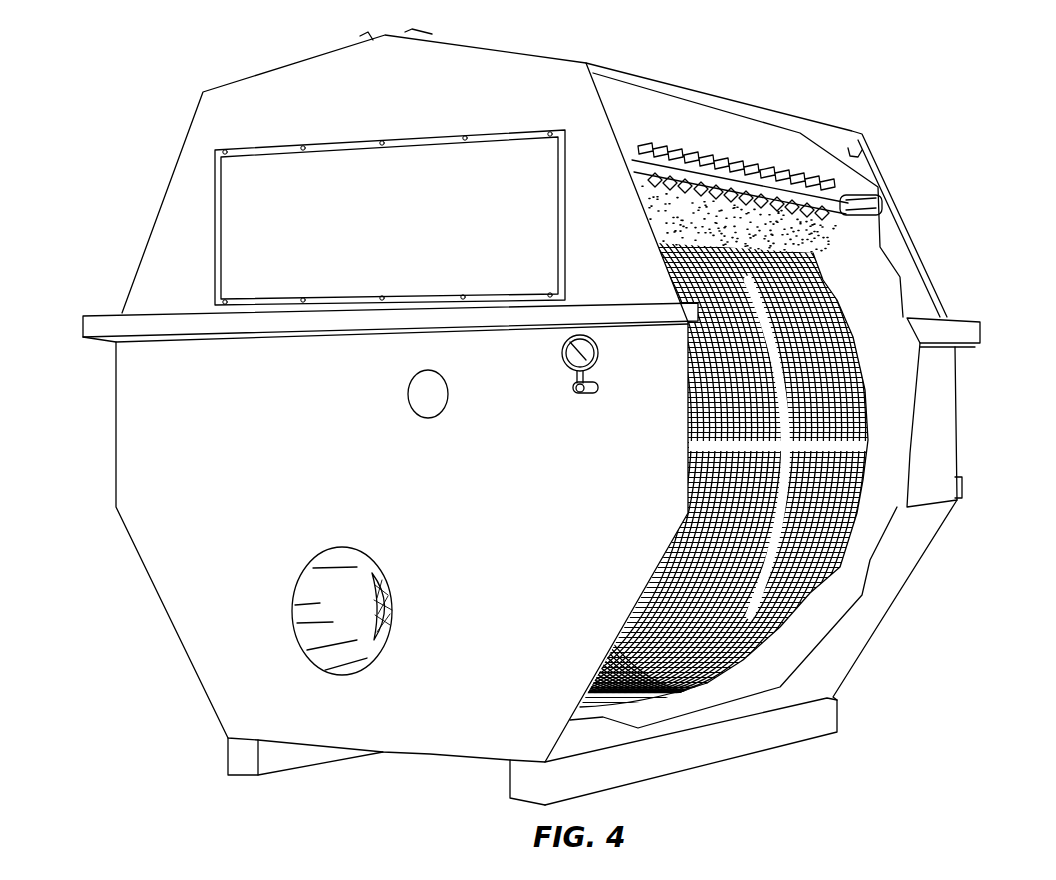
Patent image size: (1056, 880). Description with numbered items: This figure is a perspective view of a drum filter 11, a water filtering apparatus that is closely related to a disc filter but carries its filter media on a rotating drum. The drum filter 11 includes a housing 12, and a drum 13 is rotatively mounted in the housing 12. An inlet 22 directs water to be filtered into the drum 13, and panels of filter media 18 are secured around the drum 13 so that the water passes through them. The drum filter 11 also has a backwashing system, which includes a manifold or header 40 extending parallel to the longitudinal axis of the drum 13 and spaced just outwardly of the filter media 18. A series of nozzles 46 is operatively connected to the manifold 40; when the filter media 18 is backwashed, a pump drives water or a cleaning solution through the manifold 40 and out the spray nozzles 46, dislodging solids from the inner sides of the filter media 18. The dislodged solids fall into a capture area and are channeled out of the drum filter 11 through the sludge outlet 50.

The drum filter 11 is at (729, 43).
The housing 12 is at (157, 385).
The drum 13 is at (645, 612).
The filter media 18 is at (838, 397).
The inlet 22 is at (333, 622).
The manifold or header 40 is at (848, 203).
The nozzles 46 is at (664, 158).
The outlet 50 is at (428, 393).